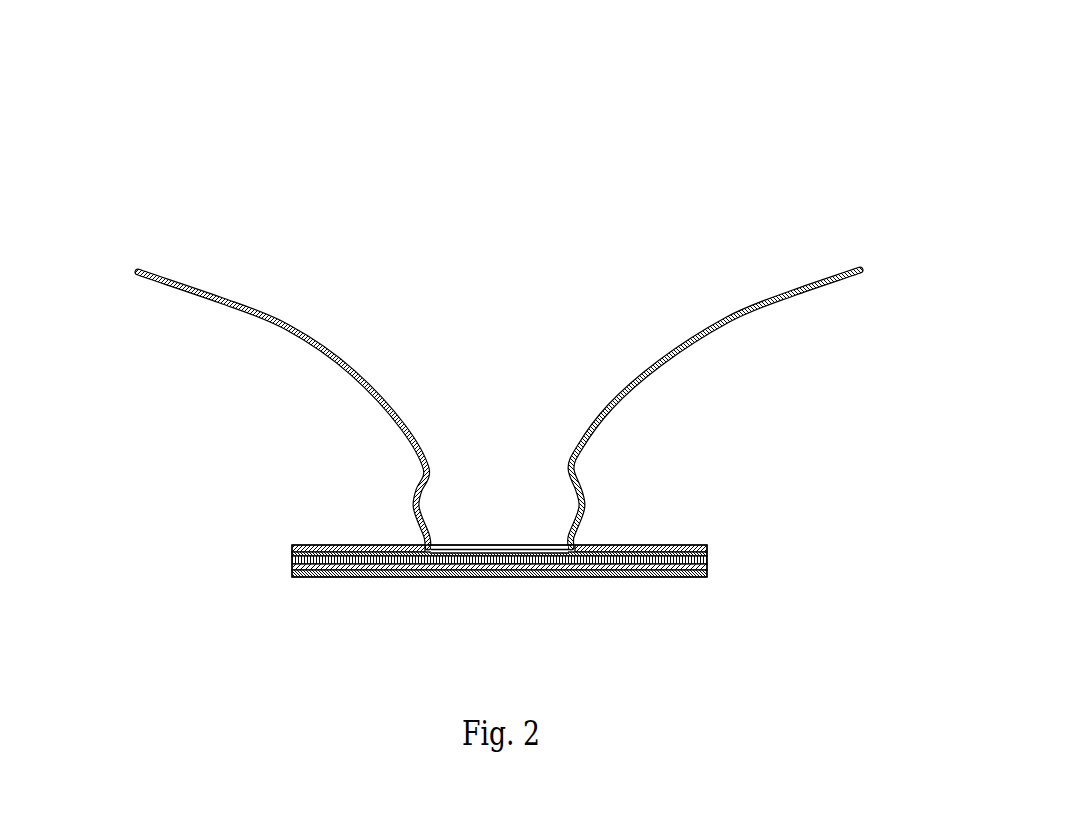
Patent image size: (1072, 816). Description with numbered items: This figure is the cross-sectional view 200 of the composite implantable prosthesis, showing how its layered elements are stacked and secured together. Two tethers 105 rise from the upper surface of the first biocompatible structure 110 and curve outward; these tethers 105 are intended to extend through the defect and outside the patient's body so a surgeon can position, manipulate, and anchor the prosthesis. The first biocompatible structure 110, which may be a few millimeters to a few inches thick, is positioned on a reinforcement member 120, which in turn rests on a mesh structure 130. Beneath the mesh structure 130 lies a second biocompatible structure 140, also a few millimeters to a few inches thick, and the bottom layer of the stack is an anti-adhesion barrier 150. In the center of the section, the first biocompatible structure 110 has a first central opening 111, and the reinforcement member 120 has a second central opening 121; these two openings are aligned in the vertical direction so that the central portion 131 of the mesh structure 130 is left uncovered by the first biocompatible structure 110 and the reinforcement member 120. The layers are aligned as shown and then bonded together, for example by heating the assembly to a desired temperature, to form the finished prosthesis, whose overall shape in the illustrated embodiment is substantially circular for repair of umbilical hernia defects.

The cross-sectional view 200 is at (905, 103).
The tether 105 is at (303, 315).
The first biocompatible structure 110 is at (327, 544).
The first central opening 111 is at (458, 545).
The reinforcement member 120 is at (707, 553).
The second central opening 121 is at (528, 552).
The mesh structure 130 is at (292, 560).
The central portion 131 is at (488, 565).
The second biocompatible structure 140 is at (703, 574).
The anti-adhesion barrier 150 is at (320, 576).